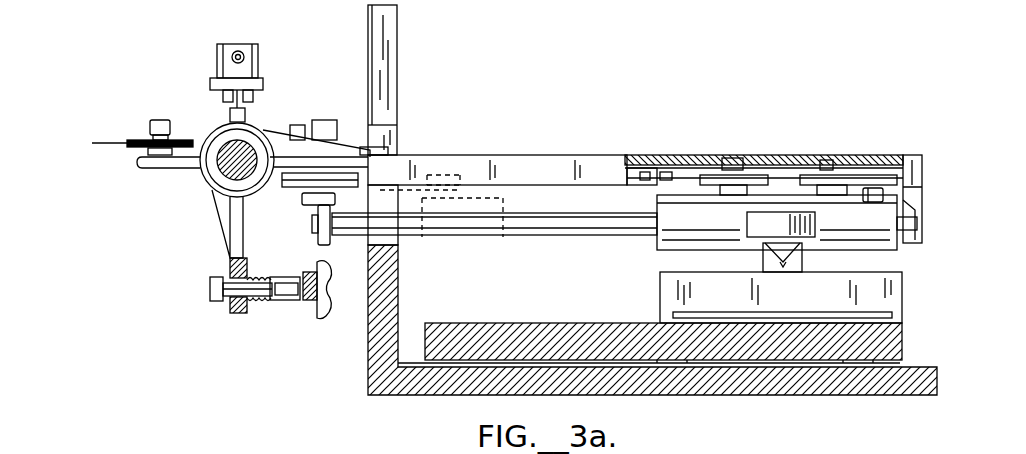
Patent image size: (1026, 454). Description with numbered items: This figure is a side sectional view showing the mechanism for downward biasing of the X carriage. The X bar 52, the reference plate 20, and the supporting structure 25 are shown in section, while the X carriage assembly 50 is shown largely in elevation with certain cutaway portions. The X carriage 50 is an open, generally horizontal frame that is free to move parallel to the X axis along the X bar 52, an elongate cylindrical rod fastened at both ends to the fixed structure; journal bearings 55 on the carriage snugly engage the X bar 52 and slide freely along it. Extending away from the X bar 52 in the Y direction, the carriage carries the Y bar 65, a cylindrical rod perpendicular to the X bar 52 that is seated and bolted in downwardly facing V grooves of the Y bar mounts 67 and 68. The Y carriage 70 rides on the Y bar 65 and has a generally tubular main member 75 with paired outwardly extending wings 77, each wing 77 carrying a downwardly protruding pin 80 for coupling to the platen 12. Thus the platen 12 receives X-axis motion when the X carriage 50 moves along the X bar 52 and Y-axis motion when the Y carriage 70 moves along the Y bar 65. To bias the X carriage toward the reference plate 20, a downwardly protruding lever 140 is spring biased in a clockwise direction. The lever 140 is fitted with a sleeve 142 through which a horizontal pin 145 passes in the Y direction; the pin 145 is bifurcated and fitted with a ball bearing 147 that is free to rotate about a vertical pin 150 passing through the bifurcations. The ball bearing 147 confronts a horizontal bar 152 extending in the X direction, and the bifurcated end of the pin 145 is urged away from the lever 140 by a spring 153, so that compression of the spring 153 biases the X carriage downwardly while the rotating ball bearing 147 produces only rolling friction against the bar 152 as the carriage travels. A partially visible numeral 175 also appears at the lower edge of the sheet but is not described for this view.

The platen 12 is at (883, 295).
The reference plate 20 is at (883, 347).
The supporting structure 25 is at (773, 387).
The X carriage assembly 50 is at (572, 153).
The X bar 52 is at (247, 143).
The journal bearings 55 is at (253, 157).
The Y bar 65 is at (550, 230).
The Y bar mount 67 is at (917, 195).
The Y bar mount 68 is at (310, 232).
The Y carriage 70 is at (740, 222).
The main member 75 is at (672, 223).
The wings 77 is at (772, 223).
The pin 80 is at (797, 243).
The lever 140 is at (237, 225).
The sleeve 142 is at (253, 308).
The horizontal pin 145 is at (210, 288).
The ball bearing 147 is at (298, 301).
The vertical pin 150 is at (290, 277).
The horizontal bar 152 is at (312, 263).
The spring 153 is at (258, 301).
The member 175 is at (240, 449).